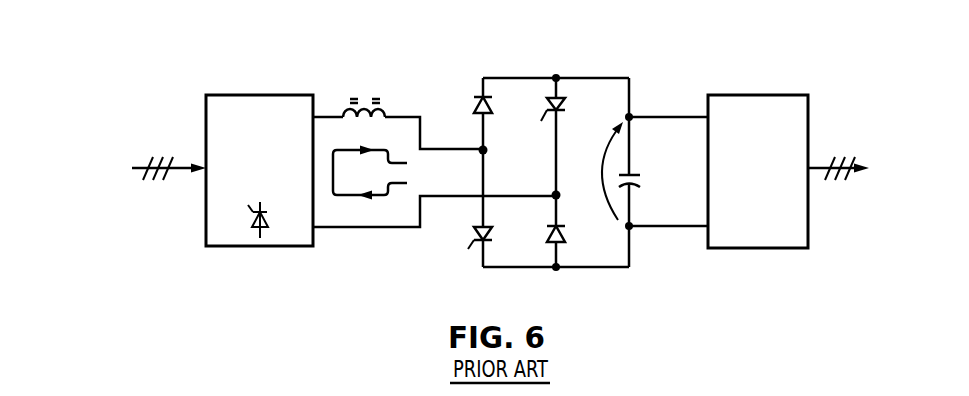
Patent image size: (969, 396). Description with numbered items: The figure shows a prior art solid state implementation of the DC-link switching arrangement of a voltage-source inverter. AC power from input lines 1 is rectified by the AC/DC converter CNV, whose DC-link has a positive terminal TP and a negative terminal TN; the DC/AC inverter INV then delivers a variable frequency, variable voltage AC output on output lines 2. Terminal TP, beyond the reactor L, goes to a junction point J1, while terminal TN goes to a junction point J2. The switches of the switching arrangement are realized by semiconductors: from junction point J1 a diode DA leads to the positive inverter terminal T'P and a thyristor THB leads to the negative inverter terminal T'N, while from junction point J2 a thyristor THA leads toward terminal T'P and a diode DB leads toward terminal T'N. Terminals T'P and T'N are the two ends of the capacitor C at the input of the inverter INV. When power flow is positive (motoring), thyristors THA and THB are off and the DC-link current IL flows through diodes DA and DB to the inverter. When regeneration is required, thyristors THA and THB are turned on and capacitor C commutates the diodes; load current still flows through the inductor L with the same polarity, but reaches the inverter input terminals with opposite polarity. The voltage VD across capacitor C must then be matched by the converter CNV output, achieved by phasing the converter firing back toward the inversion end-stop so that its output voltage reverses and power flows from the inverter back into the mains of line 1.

The input lines 1 is at (142, 165).
The output lines 2 is at (825, 165).
The AC/DC converter CNV is at (253, 95).
The reactor L is at (345, 113).
The positive terminal TP is at (403, 117).
The negative terminal TN is at (382, 227).
The DC-link current IL is at (370, 173).
The junction point J1 is at (487, 152).
The junction point J2 is at (556, 194).
The diode DA is at (487, 113).
The diode DB is at (562, 235).
The thyristor THA is at (492, 230).
The thyristor THB is at (562, 105).
The positive input terminal of inverter T'P is at (556, 57).
The negative input terminal of inverter T'N is at (558, 286).
The voltage across capacitor VD is at (606, 171).
The capacitor C is at (641, 181).
The DC/AC inverter INV is at (748, 95).